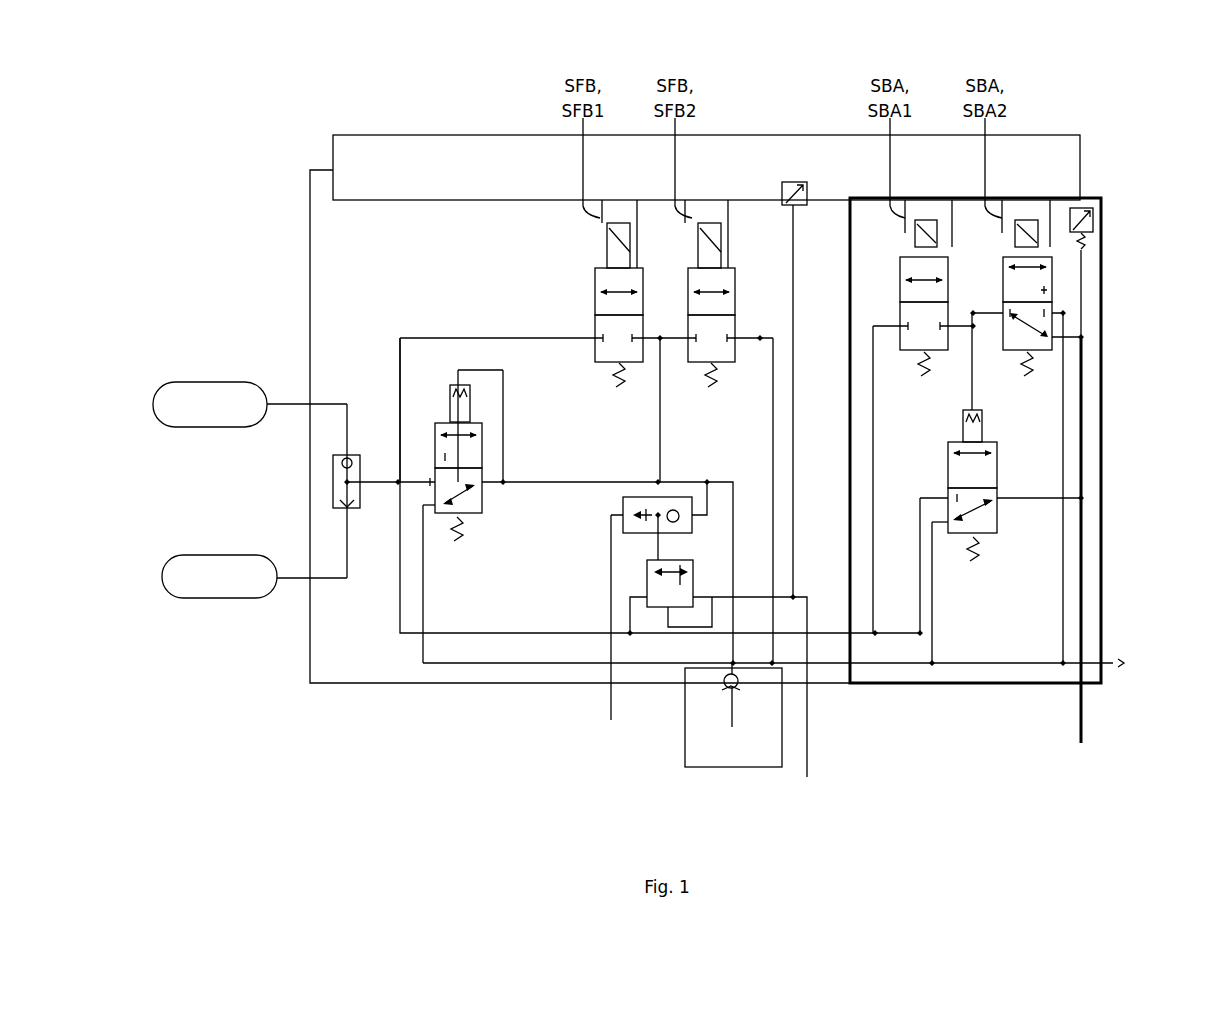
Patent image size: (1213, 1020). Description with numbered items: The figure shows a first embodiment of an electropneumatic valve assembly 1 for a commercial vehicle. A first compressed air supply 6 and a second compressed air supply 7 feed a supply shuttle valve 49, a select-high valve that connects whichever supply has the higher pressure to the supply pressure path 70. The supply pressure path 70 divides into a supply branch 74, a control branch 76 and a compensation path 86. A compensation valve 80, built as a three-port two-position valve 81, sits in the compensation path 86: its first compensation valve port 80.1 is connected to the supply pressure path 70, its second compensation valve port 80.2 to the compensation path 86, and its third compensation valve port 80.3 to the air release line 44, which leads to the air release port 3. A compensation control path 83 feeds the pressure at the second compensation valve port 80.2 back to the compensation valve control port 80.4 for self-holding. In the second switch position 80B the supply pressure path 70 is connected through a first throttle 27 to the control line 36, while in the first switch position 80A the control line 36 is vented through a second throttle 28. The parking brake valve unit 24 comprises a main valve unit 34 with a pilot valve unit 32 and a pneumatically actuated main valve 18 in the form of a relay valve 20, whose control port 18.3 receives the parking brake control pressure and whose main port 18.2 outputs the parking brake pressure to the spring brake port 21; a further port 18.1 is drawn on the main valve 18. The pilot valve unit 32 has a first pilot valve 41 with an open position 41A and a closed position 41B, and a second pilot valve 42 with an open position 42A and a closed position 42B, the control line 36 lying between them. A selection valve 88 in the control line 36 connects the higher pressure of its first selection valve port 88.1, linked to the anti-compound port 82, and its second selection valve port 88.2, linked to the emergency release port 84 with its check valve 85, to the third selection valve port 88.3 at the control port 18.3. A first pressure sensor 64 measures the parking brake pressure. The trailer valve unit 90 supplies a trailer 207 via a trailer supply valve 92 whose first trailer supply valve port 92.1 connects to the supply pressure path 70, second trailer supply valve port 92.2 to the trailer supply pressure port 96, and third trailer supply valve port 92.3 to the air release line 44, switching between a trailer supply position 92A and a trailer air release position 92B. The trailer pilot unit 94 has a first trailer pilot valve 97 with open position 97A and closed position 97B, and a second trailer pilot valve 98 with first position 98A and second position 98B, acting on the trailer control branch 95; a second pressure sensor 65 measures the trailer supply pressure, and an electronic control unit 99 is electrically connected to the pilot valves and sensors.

The electropneumatic valve assembly 1 is at (423, 115).
The air release port 3 is at (1118, 663).
The first compressed air supply 6 is at (183, 570).
The second compressed air supply 7 is at (183, 392).
The pneumatically actuated main valve 18 is at (655, 584).
The relay valve 20 is at (658, 588).
The relay valve supply port 18.1 is at (647, 593).
The main port 18.2 is at (693, 597).
The control port 18.3 is at (658, 560).
The spring brake port 21 is at (807, 760).
The parking brake valve unit 24 is at (777, 293).
The first throttle 27 is at (470, 424).
The second throttle 28 is at (476, 534).
The pilot valve unit 32 is at (567, 283).
The main valve unit 34 is at (601, 574).
The control line 36 is at (660, 405).
The first pilot valve 41 is at (620, 212).
The open position 41A is at (604, 278).
The closed position 41B is at (606, 328).
The second pilot valve 42 is at (709, 214).
The open position 42A is at (697, 279).
The closed position 42B is at (730, 328).
The air release line 44 is at (423, 648).
The supply shuttle valve 49 is at (333, 477).
The first pressure sensor 64 is at (800, 152).
The second pressure sensor 65 is at (1102, 152).
The supply pressure path 70 is at (378, 488).
The supply branch 74 is at (394, 627).
The control branch 76 is at (394, 386).
The compensation valve 80 is at (459, 398).
The 3/2-way valve 81 is at (445, 423).
The first compensation valve port 80.1 is at (437, 483).
The second compensation valve port 80.2 is at (483, 480).
The third compensation valve port 80.3 is at (430, 512).
The compensation valve control port 80.4 is at (457, 383).
The first switch position 80A is at (482, 495).
The second switch position 80B is at (445, 448).
The anti-compound port 82 is at (610, 705).
The compensation control path 83 is at (492, 370).
The emergency release port 84 is at (732, 710).
The check valve 85 is at (749, 675).
The compensation path 86 is at (600, 478).
The selection valve 88 is at (653, 497).
The first selection valve port 88.1 is at (623, 515).
The second selection valve port 88.2 is at (693, 515).
The third selection valve port 88.3 is at (658, 533).
The trailer valve unit 90 is at (1071, 273).
The trailer supply valve 92 is at (1009, 464).
The first trailer supply valve port 92.1 is at (953, 498).
The second trailer supply valve port 92.2 is at (995, 500).
The third trailer supply valve port 92.3 is at (957, 510).
The trailer supply position 92A is at (953, 463).
The trailer air release position 92B is at (990, 527).
The trailer pilot unit 94 is at (881, 284).
The trailer control branch 95 is at (972, 378).
The trailer supply pressure port 96 is at (1081, 710).
The first trailer pilot valve 97 is at (922, 210).
The open position 97A is at (905, 290).
The closed position 97B is at (915, 338).
The second trailer pilot valve 98 is at (1026, 210).
The first position 98A is at (1045, 280).
The second position 98B is at (1018, 320).
The electronic control unit 99 is at (720, 143).
The trailer 207 is at (1122, 770).